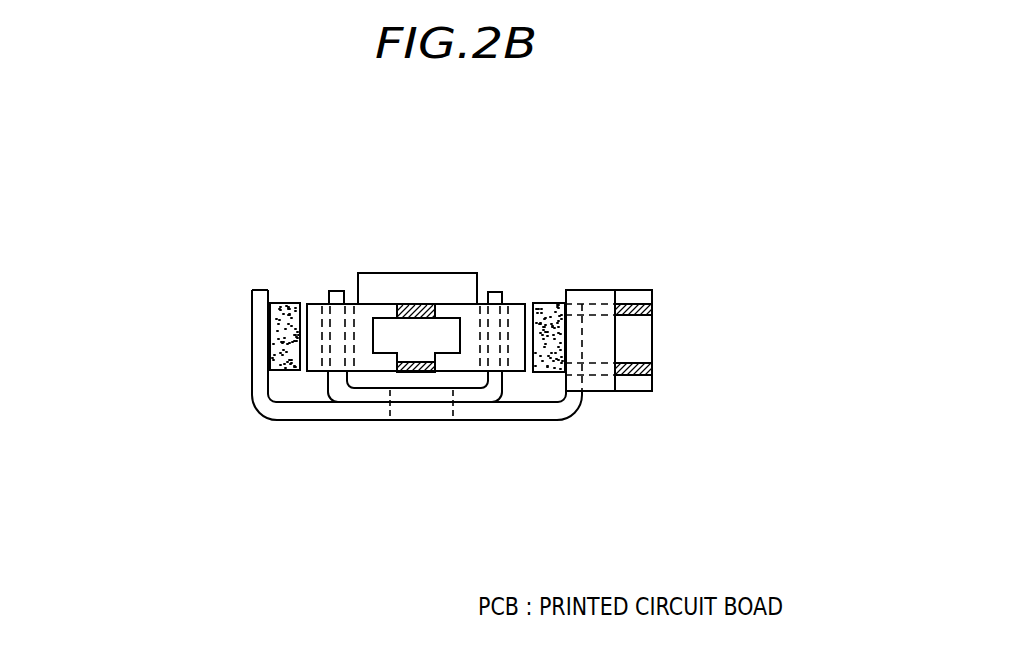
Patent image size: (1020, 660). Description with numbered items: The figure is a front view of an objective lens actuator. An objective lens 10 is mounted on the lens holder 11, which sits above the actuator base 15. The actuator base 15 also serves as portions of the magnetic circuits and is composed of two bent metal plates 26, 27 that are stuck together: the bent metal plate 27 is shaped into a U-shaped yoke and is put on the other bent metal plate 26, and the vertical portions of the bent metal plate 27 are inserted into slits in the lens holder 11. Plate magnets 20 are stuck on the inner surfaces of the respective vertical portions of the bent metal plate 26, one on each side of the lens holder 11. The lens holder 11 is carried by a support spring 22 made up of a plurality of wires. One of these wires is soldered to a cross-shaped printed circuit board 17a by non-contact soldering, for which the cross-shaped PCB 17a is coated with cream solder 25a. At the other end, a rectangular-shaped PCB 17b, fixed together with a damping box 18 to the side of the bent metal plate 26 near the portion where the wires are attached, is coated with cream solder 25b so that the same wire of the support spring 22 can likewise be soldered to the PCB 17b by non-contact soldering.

The objective lens 10 is at (438, 287).
The lens holder 11 is at (373, 308).
The actuator base 15 is at (268, 427).
The cross-shaped printed circuit board 17a is at (388, 337).
The rectangular-shaped PCB 17b is at (638, 345).
The damping box 18 is at (597, 301).
The plate magnet 20 is at (550, 250).
The support spring 22 is at (508, 435).
The cream solder 25a is at (412, 305).
The cream solder 25b is at (652, 308).
The bent metal plate 26 is at (550, 413).
The bent metal plate 27 is at (333, 291).